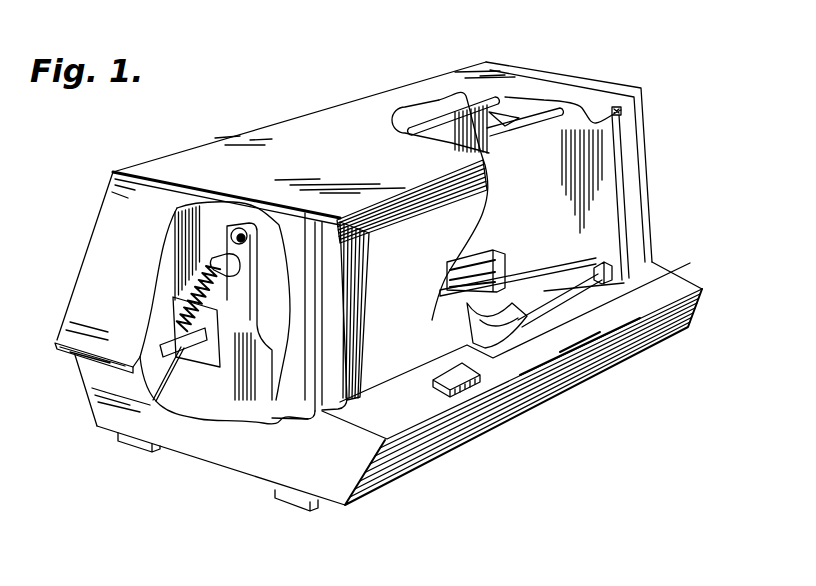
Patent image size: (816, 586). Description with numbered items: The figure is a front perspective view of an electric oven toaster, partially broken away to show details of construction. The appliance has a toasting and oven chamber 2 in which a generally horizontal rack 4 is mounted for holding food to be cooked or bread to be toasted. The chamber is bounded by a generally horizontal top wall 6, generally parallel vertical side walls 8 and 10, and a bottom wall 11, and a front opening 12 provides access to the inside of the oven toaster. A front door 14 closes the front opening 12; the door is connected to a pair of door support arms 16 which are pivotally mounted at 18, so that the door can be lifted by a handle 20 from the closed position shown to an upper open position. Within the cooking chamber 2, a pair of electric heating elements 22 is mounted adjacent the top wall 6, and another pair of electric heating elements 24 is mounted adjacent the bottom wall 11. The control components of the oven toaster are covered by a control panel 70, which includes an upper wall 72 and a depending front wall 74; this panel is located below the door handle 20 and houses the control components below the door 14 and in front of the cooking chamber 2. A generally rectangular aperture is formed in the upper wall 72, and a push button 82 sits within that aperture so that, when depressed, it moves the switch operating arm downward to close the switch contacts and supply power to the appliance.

The toasting and oven chamber 2 is at (604, 162).
The rack 4 is at (557, 268).
The top wall 6 is at (272, 122).
The side wall 8 is at (85, 373).
The side wall 10 is at (614, 82).
The bottom wall 11 is at (193, 453).
The front opening 12 is at (626, 248).
The front door 14 is at (408, 358).
The door support arms 16 is at (270, 360).
The pivot mounting 18 is at (237, 230).
The handle 20 is at (517, 317).
The electric heating elements 22 is at (439, 107).
The electric heating elements 24 is at (497, 258).
The control panel 70 is at (395, 440).
The upper wall 72 is at (402, 420).
The front wall 74 is at (550, 390).
The push button 82 is at (470, 385).